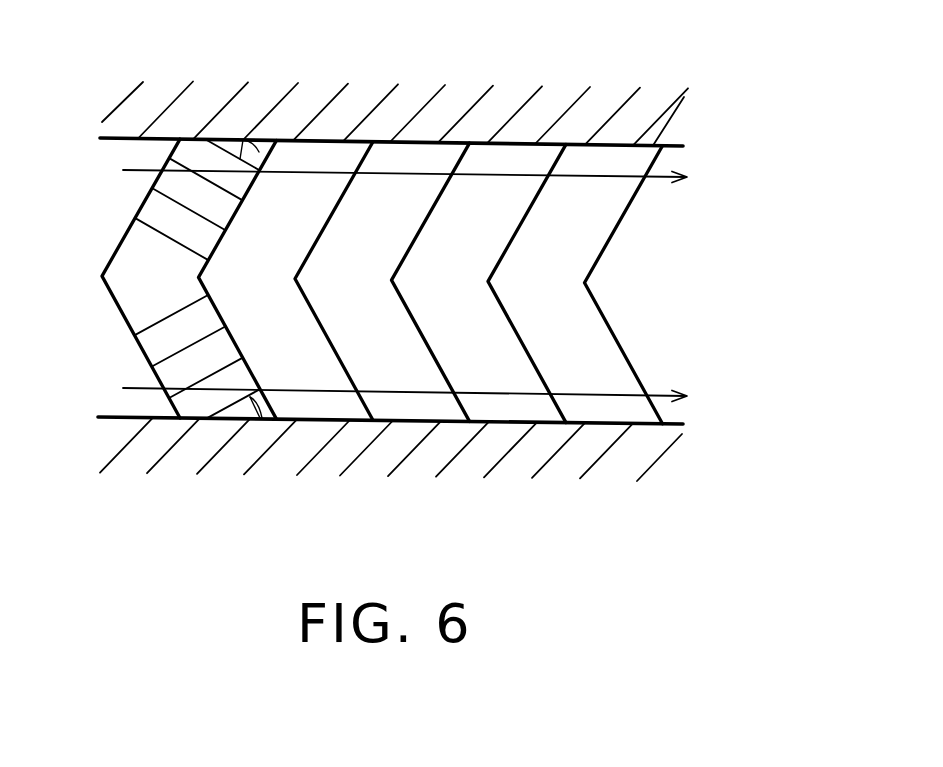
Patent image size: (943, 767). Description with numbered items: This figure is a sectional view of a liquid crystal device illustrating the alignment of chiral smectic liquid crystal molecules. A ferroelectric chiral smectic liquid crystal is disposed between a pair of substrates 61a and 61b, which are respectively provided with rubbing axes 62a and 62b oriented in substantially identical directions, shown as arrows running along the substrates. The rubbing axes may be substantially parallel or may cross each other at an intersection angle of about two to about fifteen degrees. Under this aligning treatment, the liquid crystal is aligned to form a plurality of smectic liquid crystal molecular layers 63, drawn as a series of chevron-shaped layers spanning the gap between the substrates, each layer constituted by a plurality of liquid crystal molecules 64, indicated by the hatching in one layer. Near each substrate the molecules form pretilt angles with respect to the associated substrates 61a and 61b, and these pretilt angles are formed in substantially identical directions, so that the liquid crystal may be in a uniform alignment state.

The substrate 61a is at (657, 143).
The substrate 61b is at (676, 422).
The rubbing axis 62a is at (652, 180).
The rubbing axis 62b is at (655, 392).
The smectic liquid crystal molecular layer 63 is at (140, 302).
The liquid crystal molecule 64 is at (153, 230).